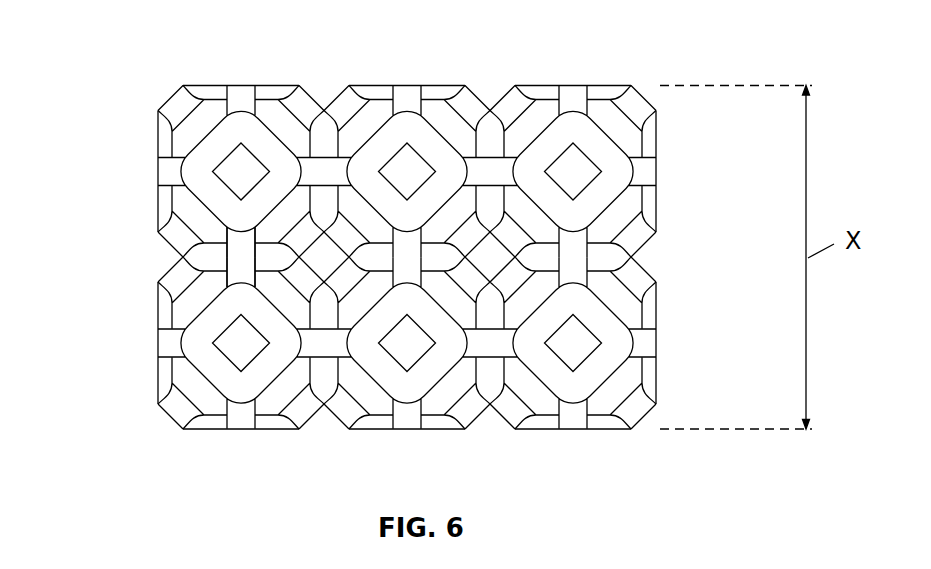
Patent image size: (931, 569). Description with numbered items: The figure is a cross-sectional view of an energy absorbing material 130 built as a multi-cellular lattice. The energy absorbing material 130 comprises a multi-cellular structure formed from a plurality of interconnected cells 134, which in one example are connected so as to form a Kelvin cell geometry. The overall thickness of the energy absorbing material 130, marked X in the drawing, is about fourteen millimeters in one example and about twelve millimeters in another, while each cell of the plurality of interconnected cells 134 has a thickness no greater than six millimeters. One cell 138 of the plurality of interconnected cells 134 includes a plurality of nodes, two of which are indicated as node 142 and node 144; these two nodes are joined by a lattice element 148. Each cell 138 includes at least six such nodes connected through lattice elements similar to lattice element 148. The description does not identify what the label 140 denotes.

The energy absorbing material 130 is at (361, 247).
The repeating array of shapes 140 is at (500, 59).
The cell 138 is at (190, 122).
The lattice element 148 is at (247, 244).
The node 142 is at (180, 233).
The plurality of interconnected cells 134 is at (154, 321).
The node 144 is at (297, 232).